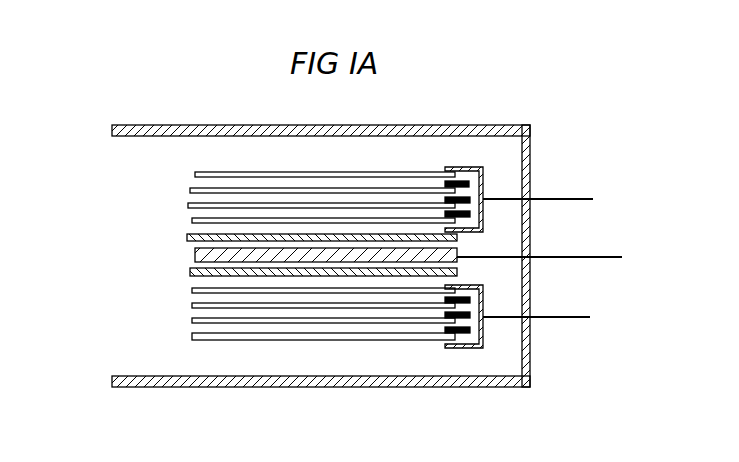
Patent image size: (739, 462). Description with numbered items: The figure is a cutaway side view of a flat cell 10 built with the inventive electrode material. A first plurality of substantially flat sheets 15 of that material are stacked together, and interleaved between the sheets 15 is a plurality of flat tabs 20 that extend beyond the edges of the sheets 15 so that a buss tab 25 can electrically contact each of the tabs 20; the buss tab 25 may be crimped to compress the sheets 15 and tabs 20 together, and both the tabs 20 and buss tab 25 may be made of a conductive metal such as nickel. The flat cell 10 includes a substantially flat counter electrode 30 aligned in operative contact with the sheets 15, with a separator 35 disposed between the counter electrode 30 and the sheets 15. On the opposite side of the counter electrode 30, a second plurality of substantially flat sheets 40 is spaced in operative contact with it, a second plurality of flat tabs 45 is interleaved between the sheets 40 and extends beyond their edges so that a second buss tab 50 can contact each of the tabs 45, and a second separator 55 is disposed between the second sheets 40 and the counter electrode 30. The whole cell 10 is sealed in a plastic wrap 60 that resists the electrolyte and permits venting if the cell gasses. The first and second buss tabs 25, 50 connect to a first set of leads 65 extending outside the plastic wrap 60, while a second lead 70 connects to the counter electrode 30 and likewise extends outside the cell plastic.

The flat cell 10 is at (103, 206).
The flat sheets 15 is at (293, 174).
The flat tabs 20 is at (483, 172).
The buss tab 25 is at (470, 175).
The counter electrode 30 is at (196, 254).
The separator 35 is at (457, 239).
The second plurality of flat sheets 40 is at (197, 338).
The second plurality of flat tabs 45 is at (467, 313).
The second buss tab 50 is at (447, 347).
The second separator 55 is at (192, 272).
The plastic wrap 60 is at (463, 388).
The first set of leads 65 is at (578, 188).
The second lead 70 is at (606, 245).